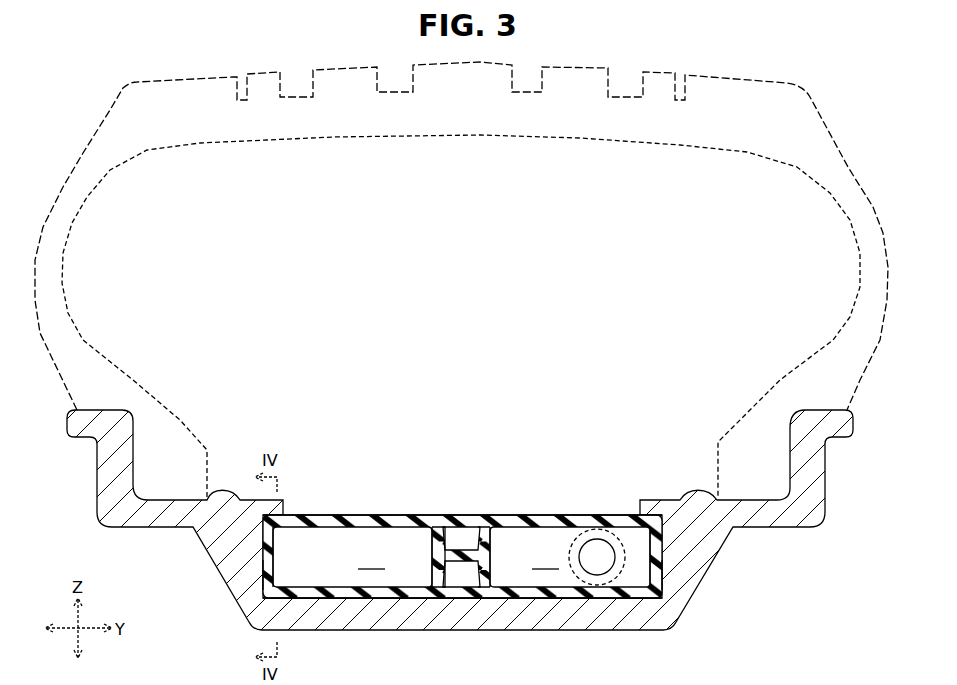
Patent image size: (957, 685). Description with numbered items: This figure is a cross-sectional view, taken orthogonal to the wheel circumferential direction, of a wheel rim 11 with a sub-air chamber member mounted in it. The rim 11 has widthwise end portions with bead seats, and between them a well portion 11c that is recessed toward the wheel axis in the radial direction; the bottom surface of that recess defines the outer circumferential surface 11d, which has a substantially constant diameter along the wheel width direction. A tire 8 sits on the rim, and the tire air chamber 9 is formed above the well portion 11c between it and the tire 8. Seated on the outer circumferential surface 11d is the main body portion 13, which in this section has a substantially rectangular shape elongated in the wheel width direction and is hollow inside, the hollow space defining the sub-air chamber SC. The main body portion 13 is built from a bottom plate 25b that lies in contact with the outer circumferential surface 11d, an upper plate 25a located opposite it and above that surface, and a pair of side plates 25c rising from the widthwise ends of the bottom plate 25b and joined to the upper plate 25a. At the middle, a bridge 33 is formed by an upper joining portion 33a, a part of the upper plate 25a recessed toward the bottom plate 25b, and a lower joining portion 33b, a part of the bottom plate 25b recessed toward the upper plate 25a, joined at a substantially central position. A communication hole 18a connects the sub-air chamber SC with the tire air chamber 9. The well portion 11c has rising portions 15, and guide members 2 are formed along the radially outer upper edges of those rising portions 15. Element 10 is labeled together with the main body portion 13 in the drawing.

The tire 8 is at (838, 132).
The guide member 2 is at (451, 538).
The rim 11 is at (451, 538).
The well portion 11c is at (460, 538).
The outer circumferential surface 11d is at (472, 600).
The tire air chamber 9 is at (470, 433).
The housing 10 is at (515, 542).
The main body portion 13 is at (586, 508).
The upper plate 25a is at (355, 515).
The bottom plate 25b is at (368, 598).
The side plate 25c is at (282, 558).
The bridge 33 is at (574, 478).
The upper joining portion 33a is at (502, 518).
The lower joining portion 33b is at (547, 516).
The communication hole 18a is at (580, 570).
The rising portion 15 is at (262, 573).